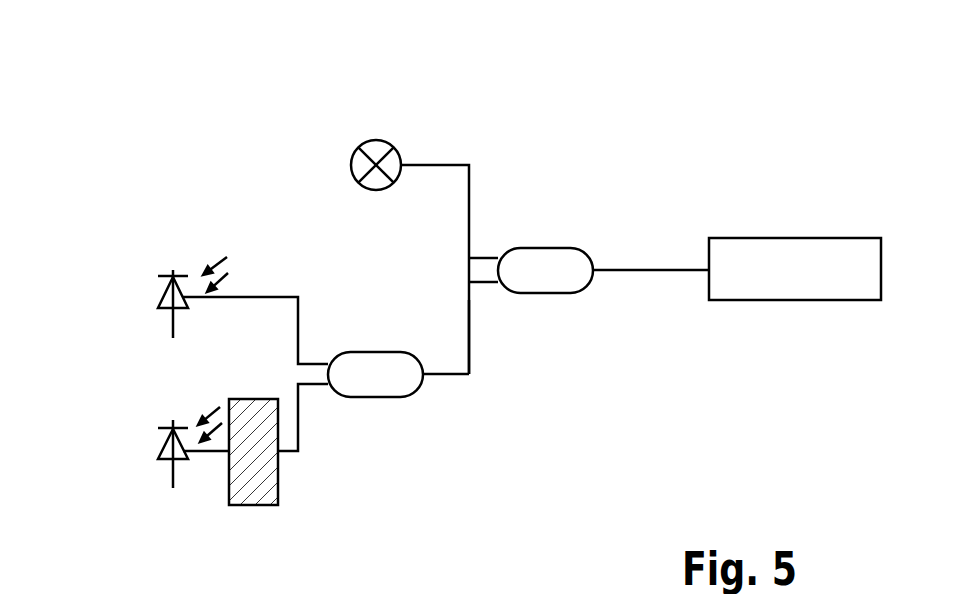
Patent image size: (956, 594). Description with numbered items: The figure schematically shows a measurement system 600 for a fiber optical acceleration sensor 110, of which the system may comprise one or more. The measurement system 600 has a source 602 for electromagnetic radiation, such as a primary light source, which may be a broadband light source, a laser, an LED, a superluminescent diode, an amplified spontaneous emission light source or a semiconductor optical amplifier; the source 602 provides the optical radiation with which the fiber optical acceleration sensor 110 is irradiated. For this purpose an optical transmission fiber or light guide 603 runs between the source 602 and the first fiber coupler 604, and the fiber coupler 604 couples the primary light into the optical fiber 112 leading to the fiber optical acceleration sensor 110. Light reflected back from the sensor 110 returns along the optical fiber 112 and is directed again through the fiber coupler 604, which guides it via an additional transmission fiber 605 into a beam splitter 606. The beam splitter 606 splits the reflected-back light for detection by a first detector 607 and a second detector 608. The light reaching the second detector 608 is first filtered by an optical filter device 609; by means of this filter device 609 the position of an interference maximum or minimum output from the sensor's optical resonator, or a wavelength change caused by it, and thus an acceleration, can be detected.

The measurement system 600 is at (152, 140).
The source 602 is at (375, 139).
The light guide 603 is at (452, 164).
The fiber coupler 604 is at (548, 248).
The optical fiber 112 is at (657, 268).
The fiber optical acceleration sensor 110 is at (805, 238).
The first detector 607 is at (173, 322).
The second detector 608 is at (173, 473).
The optical filter device 609 is at (253, 399).
The beam splitter 606 is at (375, 398).
The additional transmission fiber 605 is at (457, 375).